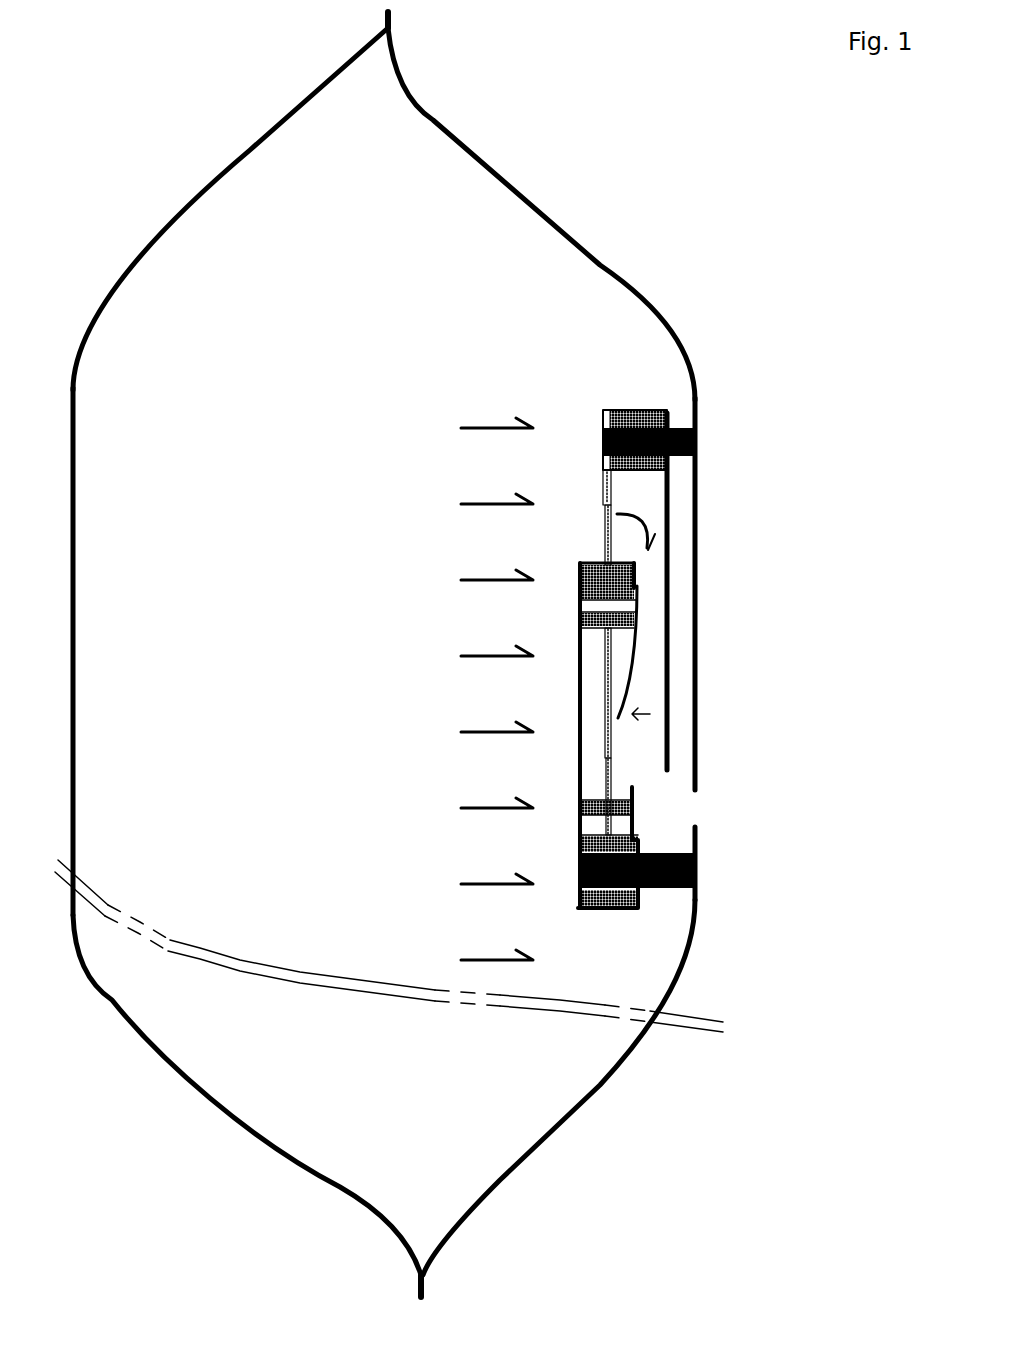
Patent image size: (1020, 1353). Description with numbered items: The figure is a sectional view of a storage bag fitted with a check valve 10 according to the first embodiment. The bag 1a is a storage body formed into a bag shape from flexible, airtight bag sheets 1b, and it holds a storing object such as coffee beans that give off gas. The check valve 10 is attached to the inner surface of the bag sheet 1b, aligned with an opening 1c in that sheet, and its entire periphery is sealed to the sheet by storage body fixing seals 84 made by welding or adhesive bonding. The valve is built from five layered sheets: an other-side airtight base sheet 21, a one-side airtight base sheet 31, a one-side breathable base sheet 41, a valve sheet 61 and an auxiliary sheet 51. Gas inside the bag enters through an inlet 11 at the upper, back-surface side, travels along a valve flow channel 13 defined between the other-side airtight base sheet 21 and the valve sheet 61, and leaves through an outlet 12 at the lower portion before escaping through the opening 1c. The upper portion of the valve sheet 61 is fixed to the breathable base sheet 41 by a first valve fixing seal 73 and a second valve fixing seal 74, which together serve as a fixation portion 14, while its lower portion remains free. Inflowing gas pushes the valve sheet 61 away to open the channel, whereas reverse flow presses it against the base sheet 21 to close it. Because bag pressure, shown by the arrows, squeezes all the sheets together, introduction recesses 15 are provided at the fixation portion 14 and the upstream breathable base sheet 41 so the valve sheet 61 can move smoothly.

The bag 1a is at (283, 112).
The bag sheet 1b is at (223, 172).
The opening 1c is at (700, 812).
The check valve 10 is at (660, 412).
The inlet 11 is at (608, 478).
The outlet 12 is at (638, 843).
The valve flow channel 13 is at (648, 687).
The fixation portion 14 is at (835, 577).
The introduction recess 15 is at (636, 573).
The other-side airtight base sheet 21 is at (667, 537).
The one-side airtight base sheet 31 is at (582, 743).
The one-side breathable base sheet 41 is at (609, 500).
The auxiliary sheet 51 is at (638, 898).
The valve sheet 61 is at (636, 675).
The first valve fixing seal 73 is at (636, 605).
The second valve fixing seal 74 is at (636, 635).
The storage body fixing seal 84 is at (618, 445).